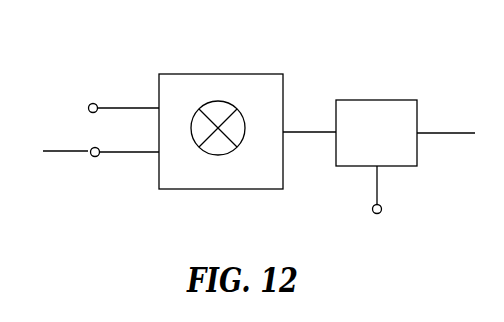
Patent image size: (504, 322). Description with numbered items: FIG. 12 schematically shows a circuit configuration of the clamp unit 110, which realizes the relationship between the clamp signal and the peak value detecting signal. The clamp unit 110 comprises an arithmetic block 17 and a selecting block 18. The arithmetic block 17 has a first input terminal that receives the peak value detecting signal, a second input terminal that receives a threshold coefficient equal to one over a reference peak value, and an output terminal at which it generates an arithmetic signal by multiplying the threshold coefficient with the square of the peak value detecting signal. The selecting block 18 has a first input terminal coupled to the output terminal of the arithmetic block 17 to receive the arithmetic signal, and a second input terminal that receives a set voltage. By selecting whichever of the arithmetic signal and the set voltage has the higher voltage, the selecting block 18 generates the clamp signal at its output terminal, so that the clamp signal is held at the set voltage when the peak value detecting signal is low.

The clamp unit 110 is at (76, 63).
The arithmetic block 17 is at (273, 180).
The selecting block 18 is at (376, 133).